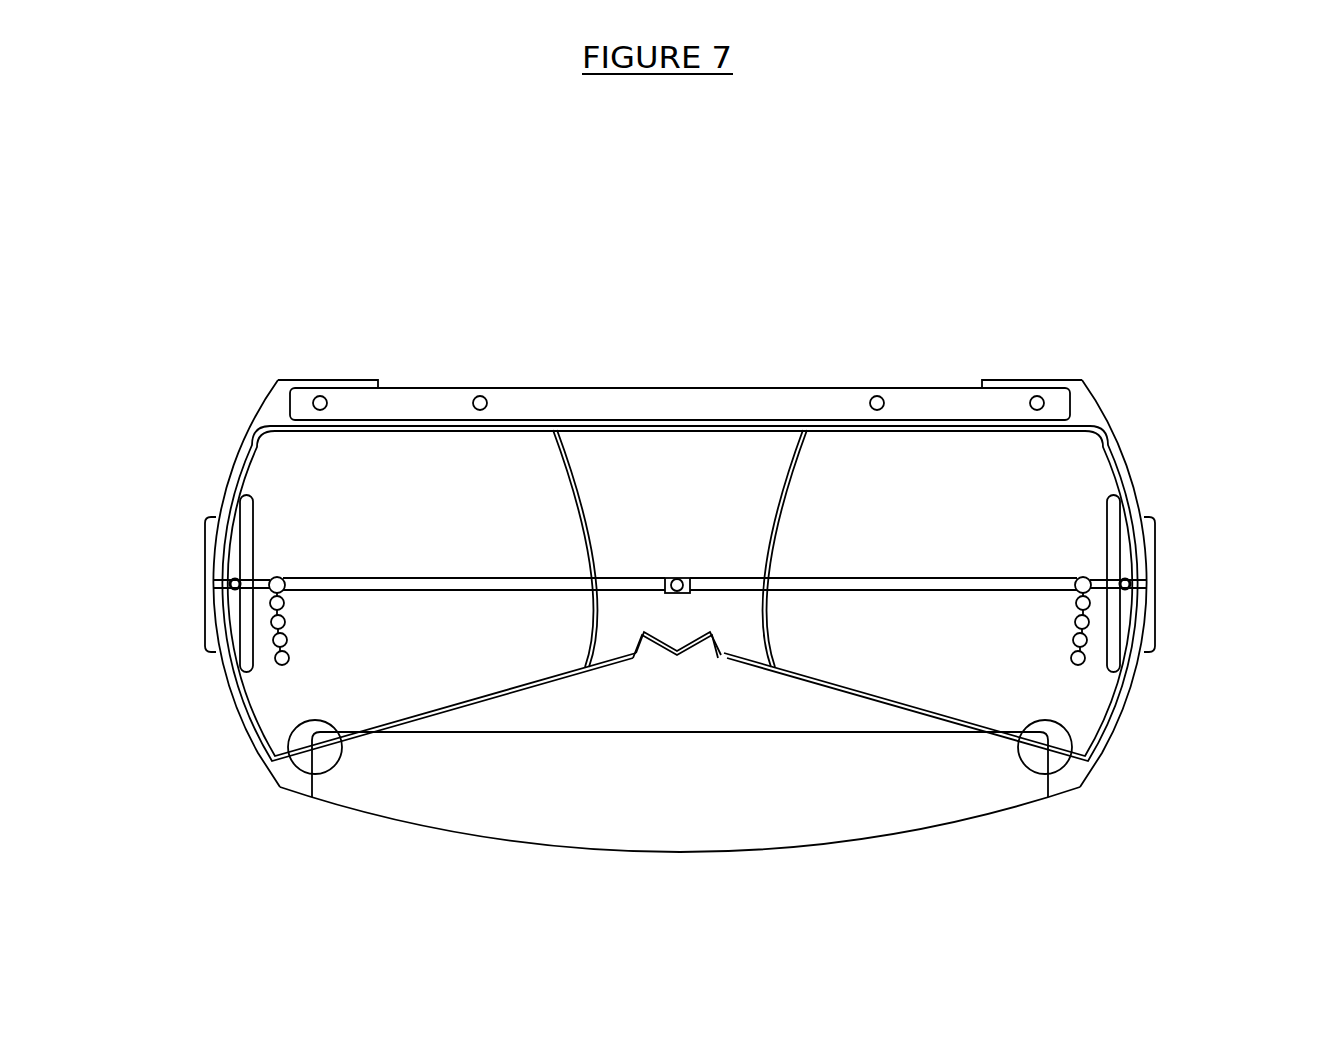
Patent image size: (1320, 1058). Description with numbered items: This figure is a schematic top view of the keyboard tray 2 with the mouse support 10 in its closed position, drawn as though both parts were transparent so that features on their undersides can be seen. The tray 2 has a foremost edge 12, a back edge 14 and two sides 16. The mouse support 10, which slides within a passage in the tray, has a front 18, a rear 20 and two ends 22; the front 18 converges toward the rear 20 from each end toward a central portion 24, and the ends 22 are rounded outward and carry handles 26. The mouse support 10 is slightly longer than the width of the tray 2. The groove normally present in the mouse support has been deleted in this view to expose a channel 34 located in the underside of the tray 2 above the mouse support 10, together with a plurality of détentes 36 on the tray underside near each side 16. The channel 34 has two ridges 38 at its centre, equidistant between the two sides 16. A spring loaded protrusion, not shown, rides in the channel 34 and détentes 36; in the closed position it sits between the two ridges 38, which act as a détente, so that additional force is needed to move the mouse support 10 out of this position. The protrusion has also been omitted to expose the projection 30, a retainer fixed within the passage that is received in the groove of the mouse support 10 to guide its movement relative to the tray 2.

The keyboard tray 2 is at (793, 403).
The mouse support 10 is at (405, 453).
The foremost edge 12 is at (897, 833).
The back edge 14 is at (650, 388).
The sides 16 is at (262, 403).
The front 18 is at (510, 697).
The rear 20 is at (915, 425).
The ends 22 is at (1113, 727).
The central portion 24 is at (677, 655).
The handles 26 is at (1113, 512).
The projection 30 is at (677, 579).
The channel 34 is at (355, 583).
The détentes 36 is at (282, 640).
The ridges 38 is at (690, 593).